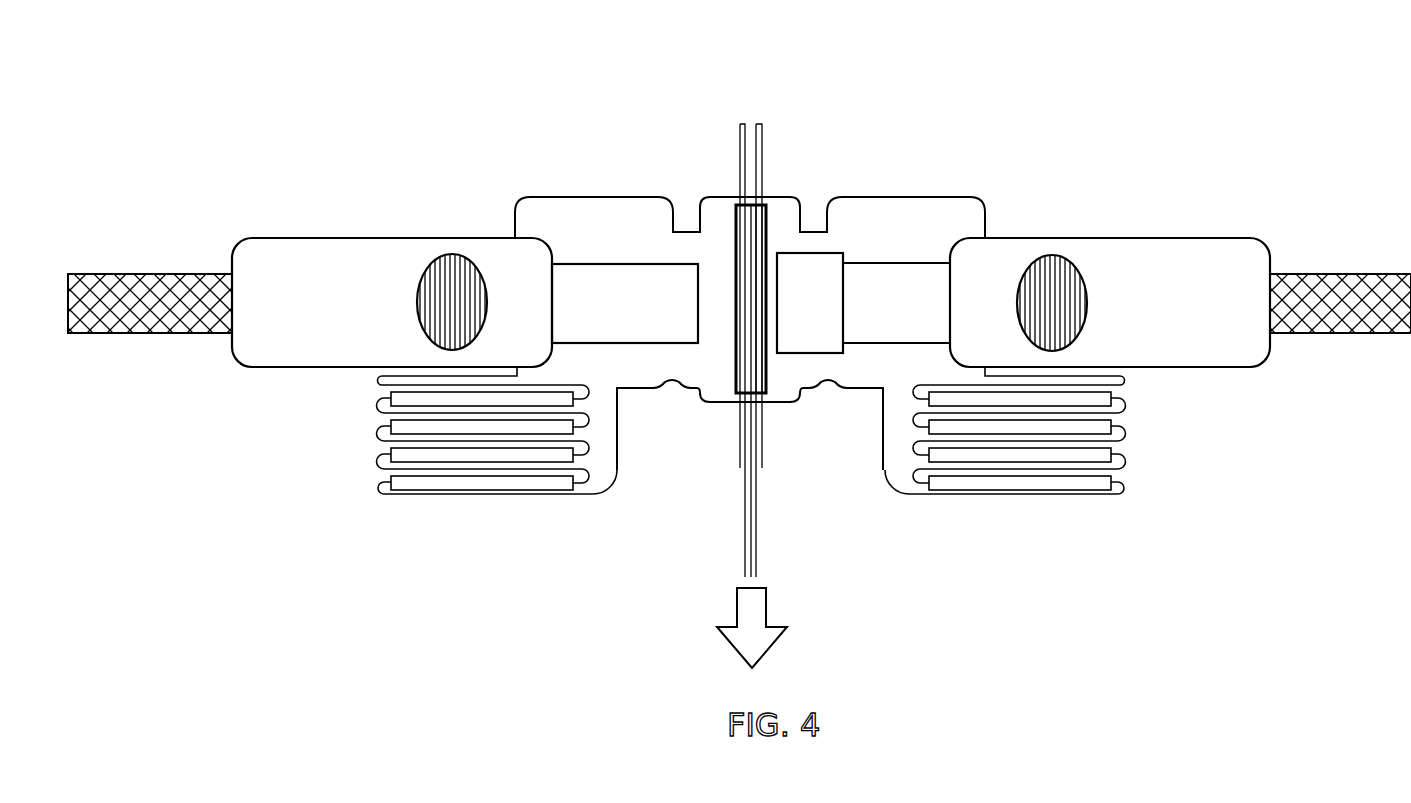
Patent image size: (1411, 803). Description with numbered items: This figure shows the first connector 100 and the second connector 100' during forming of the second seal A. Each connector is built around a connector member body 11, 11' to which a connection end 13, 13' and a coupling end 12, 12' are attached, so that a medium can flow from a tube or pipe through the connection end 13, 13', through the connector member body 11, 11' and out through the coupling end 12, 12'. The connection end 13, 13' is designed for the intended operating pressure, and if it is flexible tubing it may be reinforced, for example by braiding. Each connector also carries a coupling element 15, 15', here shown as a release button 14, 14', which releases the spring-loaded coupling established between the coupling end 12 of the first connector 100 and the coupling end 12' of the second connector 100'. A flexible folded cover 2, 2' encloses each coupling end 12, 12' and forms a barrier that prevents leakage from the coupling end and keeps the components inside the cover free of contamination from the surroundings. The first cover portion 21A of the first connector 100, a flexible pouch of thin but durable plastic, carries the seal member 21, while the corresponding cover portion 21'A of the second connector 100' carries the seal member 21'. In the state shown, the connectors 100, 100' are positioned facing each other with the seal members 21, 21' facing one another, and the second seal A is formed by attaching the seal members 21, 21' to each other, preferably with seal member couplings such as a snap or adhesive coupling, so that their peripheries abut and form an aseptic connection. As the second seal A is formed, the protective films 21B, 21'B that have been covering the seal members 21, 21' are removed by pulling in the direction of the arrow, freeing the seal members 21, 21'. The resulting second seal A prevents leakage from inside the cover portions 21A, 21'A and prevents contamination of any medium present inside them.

The first connector 100 is at (379, 342).
The second connector 100' is at (1081, 342).
The flexible folded cover 2 is at (497, 476).
The flexible folded cover 2' is at (1005, 476).
The connector member body 11 is at (392, 331).
The connector member body 11' is at (1110, 330).
The coupling end 12 is at (625, 246).
The coupling end 12' is at (863, 251).
The connection end 13 is at (146, 261).
The connection end 13' is at (1310, 261).
The release button 14 is at (447, 275).
The release button 14' is at (1058, 275).
The coupling element 15 is at (633, 309).
The coupling element 15' is at (868, 309).
The seal member 21 is at (734, 333).
The seal member 21' is at (811, 211).
The first cover portion 21A is at (695, 372).
The cover portion 21'A is at (806, 333).
The protective film 21B is at (745, 492).
The protective film 21'B is at (802, 485).
The second seal A is at (767, 148).